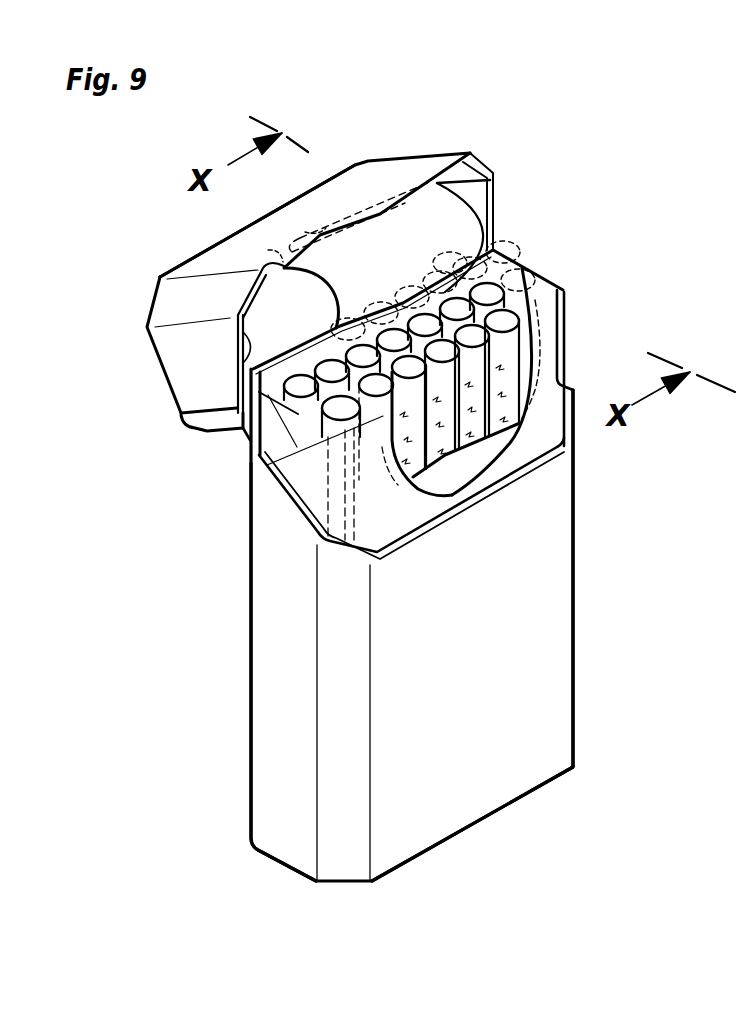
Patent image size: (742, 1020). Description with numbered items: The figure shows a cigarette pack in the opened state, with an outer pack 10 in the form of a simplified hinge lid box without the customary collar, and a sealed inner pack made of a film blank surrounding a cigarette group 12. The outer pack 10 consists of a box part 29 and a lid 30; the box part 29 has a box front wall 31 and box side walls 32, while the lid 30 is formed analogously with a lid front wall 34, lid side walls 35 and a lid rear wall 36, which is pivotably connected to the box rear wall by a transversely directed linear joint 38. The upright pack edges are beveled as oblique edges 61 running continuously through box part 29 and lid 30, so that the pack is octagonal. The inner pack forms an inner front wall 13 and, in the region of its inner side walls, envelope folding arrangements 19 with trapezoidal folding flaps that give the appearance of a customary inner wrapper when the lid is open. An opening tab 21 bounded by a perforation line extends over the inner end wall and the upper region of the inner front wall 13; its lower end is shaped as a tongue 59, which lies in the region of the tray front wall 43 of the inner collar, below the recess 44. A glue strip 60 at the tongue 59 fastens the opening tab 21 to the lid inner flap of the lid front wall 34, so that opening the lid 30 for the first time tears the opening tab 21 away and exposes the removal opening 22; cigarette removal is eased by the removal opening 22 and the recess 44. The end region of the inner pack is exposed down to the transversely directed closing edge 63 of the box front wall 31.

The outer pack 10 is at (188, 718).
The cigarette group 12 is at (470, 333).
The inner front wall 13 is at (395, 525).
The envelope folding arrangement 19 is at (303, 477).
The opening tab 21 is at (400, 230).
The removal opening 22 is at (470, 330).
The box part 29 is at (606, 666).
The lid 30 is at (514, 130).
The box front wall 31 is at (448, 657).
The box side wall 32 is at (270, 752).
The lid front wall 34 is at (238, 252).
The lid side wall 35 is at (192, 360).
The lid rear wall 36 is at (220, 430).
The linear joint 38 is at (247, 438).
The tray front wall 43 is at (478, 474).
The recess 44 is at (468, 458).
The tongue 59 is at (373, 213).
The glue strip 60 is at (345, 213).
The oblique edges 61 is at (181, 307).
The closing edge 63 is at (492, 468).